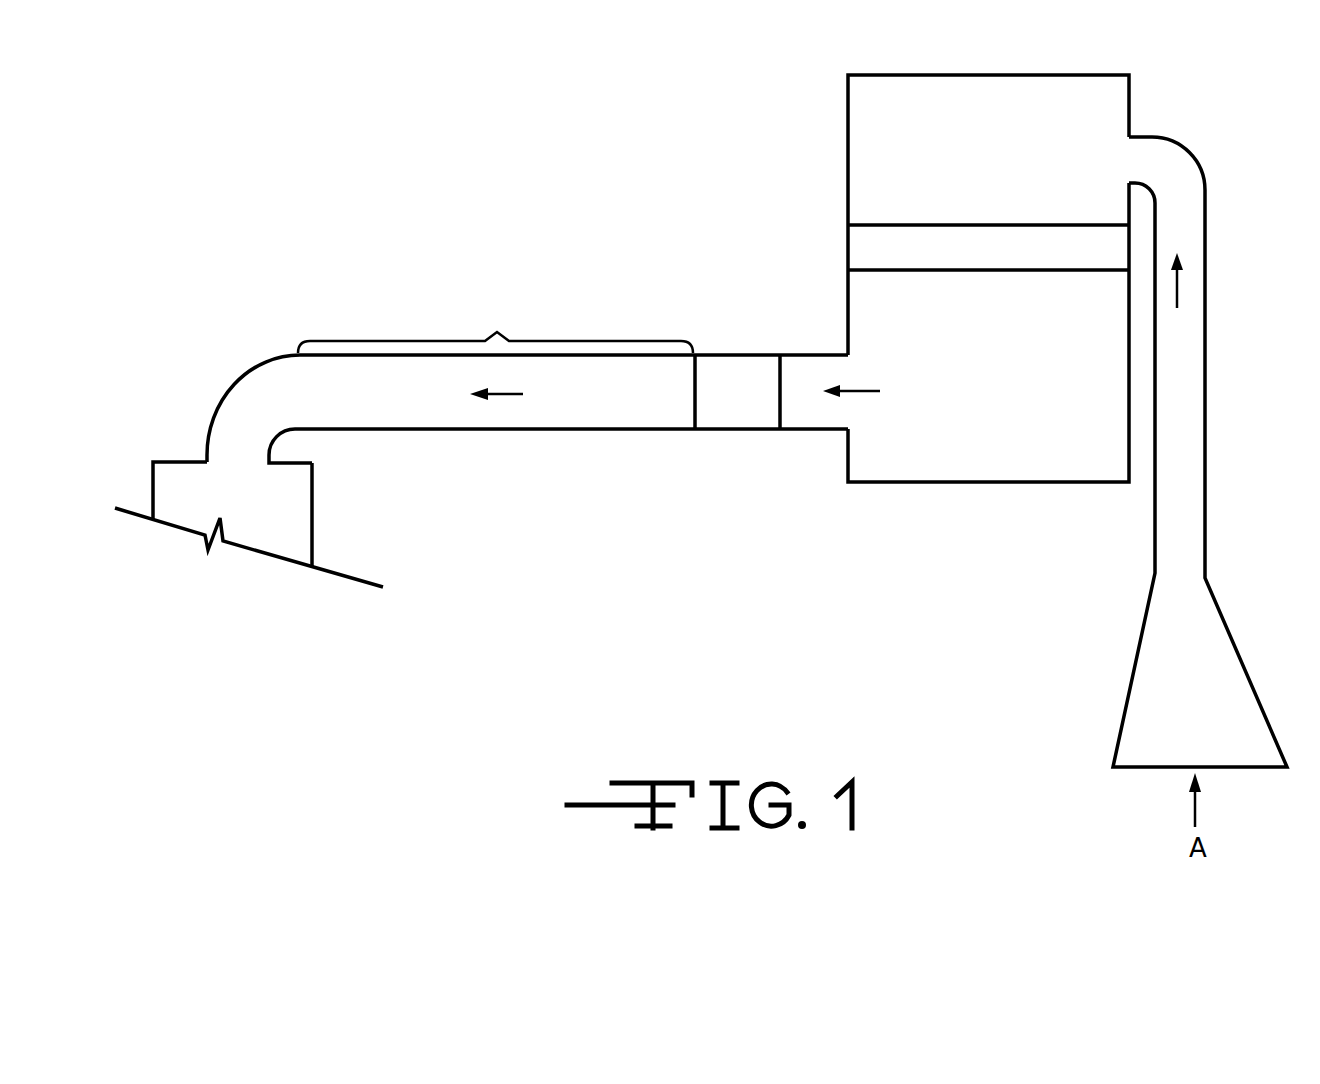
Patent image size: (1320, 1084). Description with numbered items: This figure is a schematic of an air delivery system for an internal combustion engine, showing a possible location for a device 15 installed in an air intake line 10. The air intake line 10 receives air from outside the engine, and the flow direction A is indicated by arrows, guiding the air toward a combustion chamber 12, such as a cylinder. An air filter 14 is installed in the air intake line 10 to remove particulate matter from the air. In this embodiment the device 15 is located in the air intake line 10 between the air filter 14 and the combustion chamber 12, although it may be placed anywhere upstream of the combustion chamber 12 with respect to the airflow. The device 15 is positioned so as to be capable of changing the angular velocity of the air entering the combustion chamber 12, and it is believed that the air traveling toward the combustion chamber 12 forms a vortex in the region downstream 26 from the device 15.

The air intake line 10 is at (555, 429).
The combustion chamber 12 is at (312, 518).
The air filter 14 is at (848, 243).
The device 15 is at (723, 405).
The downstream 26 is at (495, 326).